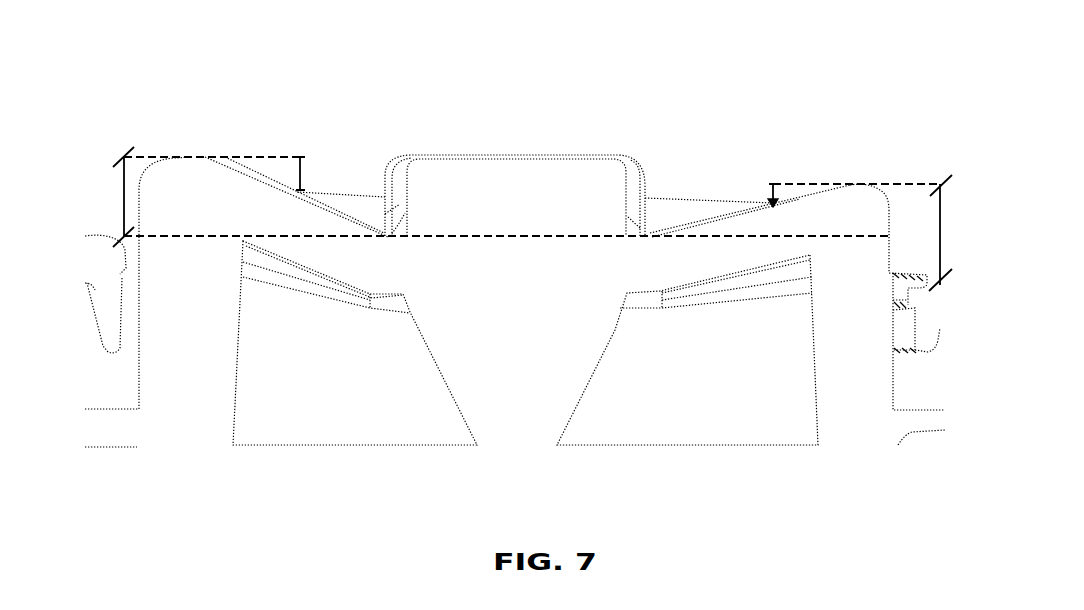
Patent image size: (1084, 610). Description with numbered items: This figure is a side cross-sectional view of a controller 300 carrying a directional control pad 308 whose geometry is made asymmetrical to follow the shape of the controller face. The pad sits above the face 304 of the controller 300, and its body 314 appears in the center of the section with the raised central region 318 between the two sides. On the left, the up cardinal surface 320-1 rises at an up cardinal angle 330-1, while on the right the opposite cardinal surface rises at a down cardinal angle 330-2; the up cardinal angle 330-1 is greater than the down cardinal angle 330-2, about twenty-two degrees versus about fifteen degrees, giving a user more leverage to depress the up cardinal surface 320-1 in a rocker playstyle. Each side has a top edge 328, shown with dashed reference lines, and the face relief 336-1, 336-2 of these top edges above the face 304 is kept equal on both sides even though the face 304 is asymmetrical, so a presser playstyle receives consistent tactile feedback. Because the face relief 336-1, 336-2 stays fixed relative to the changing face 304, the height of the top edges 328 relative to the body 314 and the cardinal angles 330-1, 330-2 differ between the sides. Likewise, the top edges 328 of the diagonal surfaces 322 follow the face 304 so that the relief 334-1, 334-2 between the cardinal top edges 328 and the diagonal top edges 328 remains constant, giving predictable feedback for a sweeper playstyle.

The controller 300 is at (872, 107).
The face 304 is at (937, 306).
The directional control pad 308 is at (794, 57).
The body 314 is at (525, 343).
The central bump 318 is at (512, 236).
The up cardinal surface 320-1 is at (361, 237).
The diagonal surfaces 322 is at (335, 203).
The top edge 328 is at (172, 152).
The up cardinal angle 330-1 is at (283, 237).
The down cardinal angle 330-2 is at (719, 218).
The relief 334-1 is at (302, 182).
The relief 334-2 is at (771, 192).
The face relief 336-1 is at (124, 203).
The face relief 336-2 is at (940, 215).